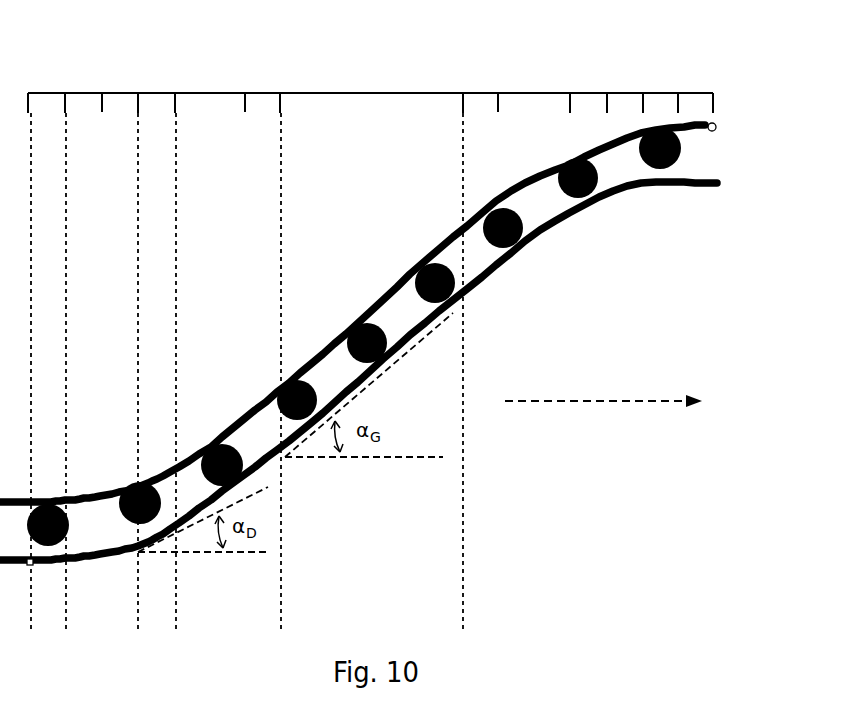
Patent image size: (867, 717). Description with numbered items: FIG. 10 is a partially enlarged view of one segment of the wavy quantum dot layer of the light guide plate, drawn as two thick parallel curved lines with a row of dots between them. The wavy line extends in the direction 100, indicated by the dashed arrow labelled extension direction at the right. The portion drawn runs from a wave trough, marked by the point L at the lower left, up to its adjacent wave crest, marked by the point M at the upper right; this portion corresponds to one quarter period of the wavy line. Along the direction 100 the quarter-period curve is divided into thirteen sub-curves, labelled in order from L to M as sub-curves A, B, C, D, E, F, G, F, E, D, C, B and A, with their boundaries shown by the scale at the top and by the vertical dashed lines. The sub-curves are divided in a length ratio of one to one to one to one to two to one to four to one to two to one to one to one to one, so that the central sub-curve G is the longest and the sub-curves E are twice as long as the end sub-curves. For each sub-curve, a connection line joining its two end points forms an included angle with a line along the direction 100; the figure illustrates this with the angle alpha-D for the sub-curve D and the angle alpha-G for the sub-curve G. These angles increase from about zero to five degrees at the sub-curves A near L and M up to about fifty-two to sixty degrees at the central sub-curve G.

The direction in which the wavy line extends 100 is at (603, 375).
The wave trough point L is at (19, 582).
The wave crest point M is at (726, 127).
The sub-curve A is at (697, 85).
The sub-curve B is at (660, 85).
The sub-curve C is at (625, 85).
The sub-curve D is at (588, 85).
The sub-curve E is at (528, 85).
The sub-curve F is at (480, 85).
The sub-curve G is at (370, 93).